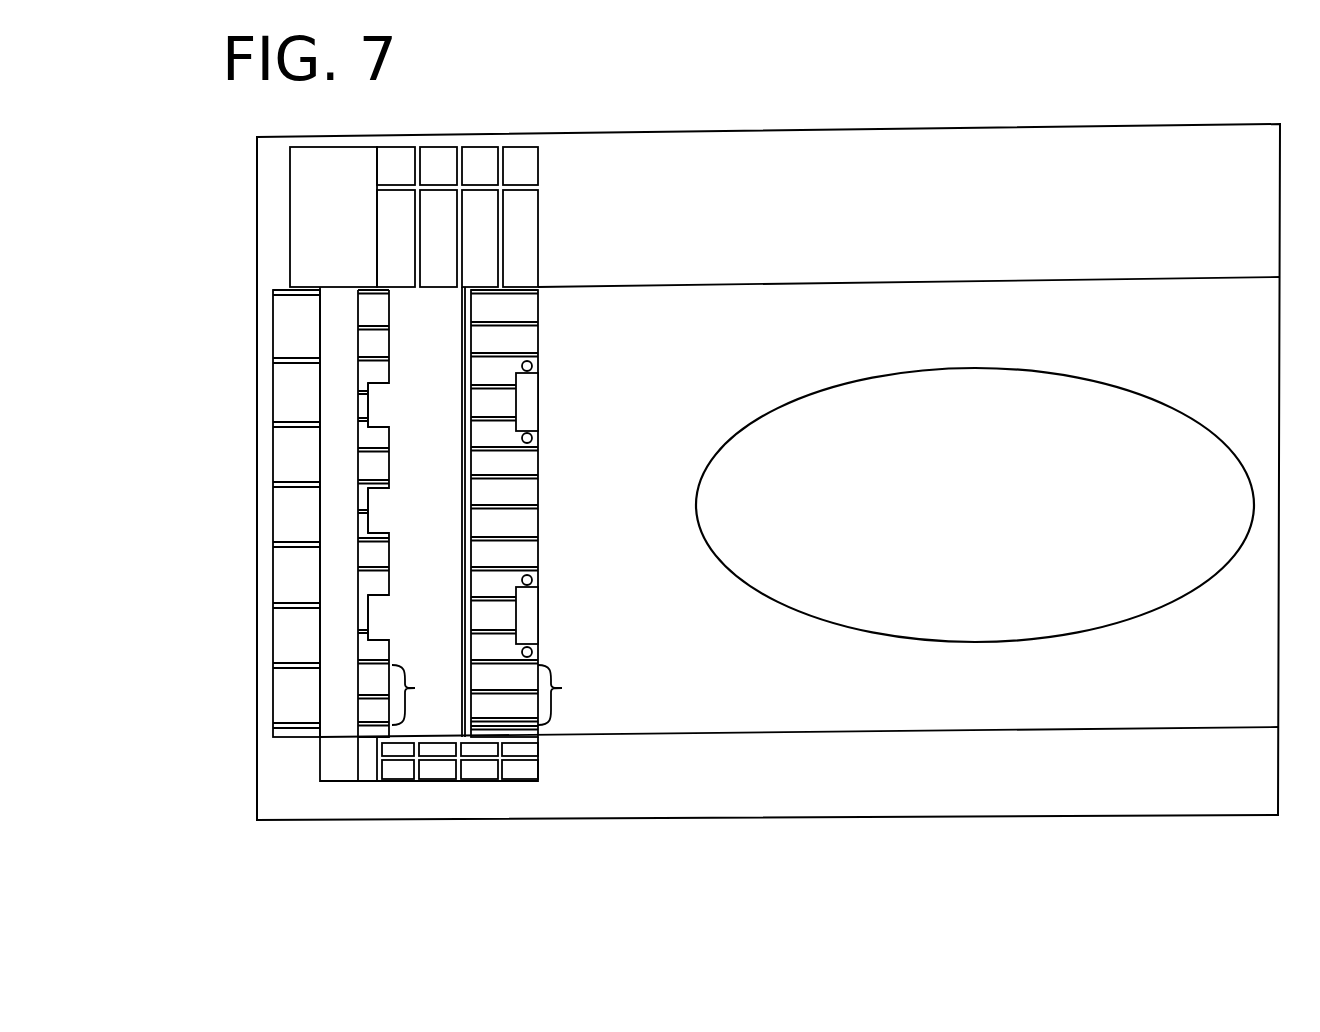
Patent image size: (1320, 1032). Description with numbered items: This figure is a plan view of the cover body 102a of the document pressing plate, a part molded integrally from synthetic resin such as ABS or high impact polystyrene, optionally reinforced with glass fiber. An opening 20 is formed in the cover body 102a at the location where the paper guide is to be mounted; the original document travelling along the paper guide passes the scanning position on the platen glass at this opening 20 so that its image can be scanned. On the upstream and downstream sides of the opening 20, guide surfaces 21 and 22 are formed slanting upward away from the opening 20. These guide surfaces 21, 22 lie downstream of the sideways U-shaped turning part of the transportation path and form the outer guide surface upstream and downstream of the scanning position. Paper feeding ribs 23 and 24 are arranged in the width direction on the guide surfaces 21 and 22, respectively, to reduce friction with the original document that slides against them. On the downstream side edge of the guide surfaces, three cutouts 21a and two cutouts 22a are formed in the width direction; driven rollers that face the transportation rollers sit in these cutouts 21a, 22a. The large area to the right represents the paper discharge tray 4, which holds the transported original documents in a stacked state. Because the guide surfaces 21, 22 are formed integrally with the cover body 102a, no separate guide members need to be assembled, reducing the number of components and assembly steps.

The paper discharge tray 4 is at (970, 526).
The opening 20 is at (405, 308).
The guide surface 21 is at (384, 468).
The cutouts 21a is at (401, 407).
The guide surface 22 is at (532, 523).
The cutouts 22a is at (548, 402).
The paper feeding ribs 23 is at (428, 694).
The paper feeding ribs 24 is at (578, 694).
The cover body 102a is at (1076, 863).